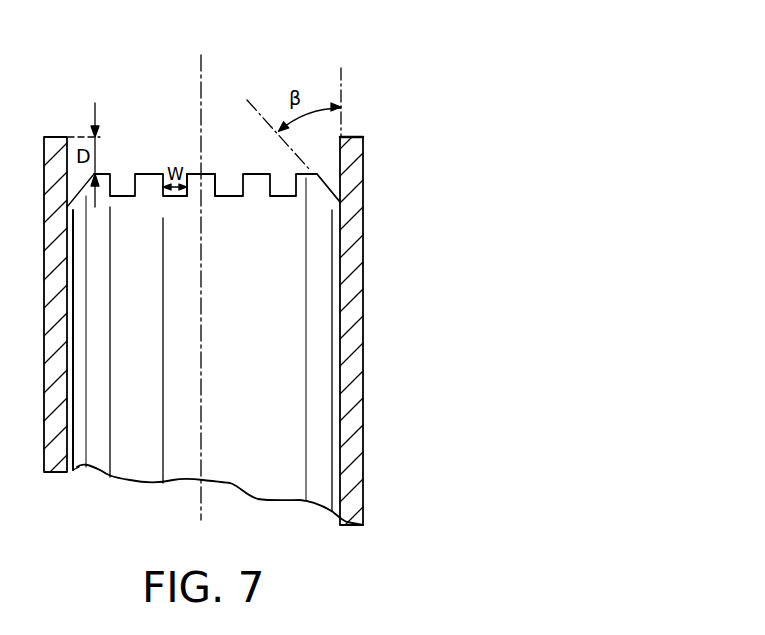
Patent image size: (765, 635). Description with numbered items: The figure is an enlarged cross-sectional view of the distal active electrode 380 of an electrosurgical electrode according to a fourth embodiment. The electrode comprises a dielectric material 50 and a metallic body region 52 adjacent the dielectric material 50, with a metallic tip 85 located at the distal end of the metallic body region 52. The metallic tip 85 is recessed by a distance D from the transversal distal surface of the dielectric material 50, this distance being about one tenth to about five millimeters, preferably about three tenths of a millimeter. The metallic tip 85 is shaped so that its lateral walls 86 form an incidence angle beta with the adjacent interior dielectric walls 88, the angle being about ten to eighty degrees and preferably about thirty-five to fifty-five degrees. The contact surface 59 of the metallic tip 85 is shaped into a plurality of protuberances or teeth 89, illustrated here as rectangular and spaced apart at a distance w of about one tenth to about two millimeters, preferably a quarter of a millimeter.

The distal active electrode 380 is at (354, 83).
The dielectric material 50 is at (362, 169).
The metallic body region 52 is at (318, 447).
The metallic tip 85 is at (282, 220).
The lateral walls 86 is at (327, 180).
The interior dielectric walls 88 is at (341, 148).
The protuberances 89 is at (150, 185).
The contact surface 59 is at (207, 173).